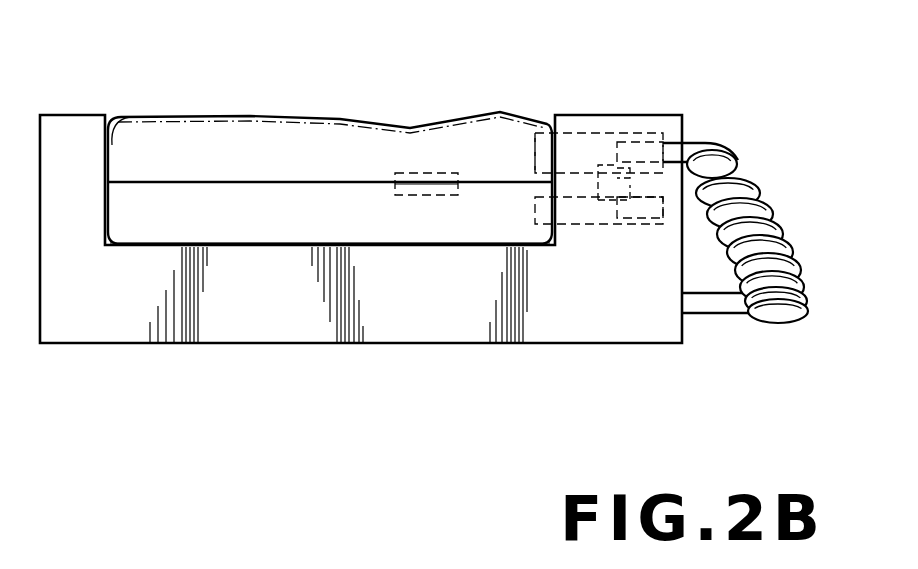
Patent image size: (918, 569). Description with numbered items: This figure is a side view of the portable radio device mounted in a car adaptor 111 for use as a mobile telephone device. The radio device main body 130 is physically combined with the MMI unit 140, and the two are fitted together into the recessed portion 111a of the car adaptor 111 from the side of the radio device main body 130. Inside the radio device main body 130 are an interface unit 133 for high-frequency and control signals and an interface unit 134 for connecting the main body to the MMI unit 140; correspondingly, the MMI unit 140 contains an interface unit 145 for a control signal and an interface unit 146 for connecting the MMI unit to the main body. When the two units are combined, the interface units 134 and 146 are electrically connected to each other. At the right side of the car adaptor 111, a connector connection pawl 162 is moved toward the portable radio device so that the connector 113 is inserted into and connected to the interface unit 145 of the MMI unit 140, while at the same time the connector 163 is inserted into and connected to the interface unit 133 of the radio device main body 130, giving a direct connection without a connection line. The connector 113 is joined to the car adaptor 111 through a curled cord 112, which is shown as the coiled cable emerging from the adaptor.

The car adaptor 111 is at (130, 310).
The recessed portion 111a is at (123, 118).
The curled cord 112 is at (775, 182).
The connector 113 is at (577, 152).
The radio device main body 130 is at (267, 217).
The interface unit 133 is at (530, 225).
The interface unit 134 is at (425, 197).
The MMI unit 140 is at (270, 140).
The interface unit 145 is at (535, 172).
The interface unit 146 is at (420, 173).
The connector connection pawl 162 is at (632, 187).
The connector 163 is at (577, 228).